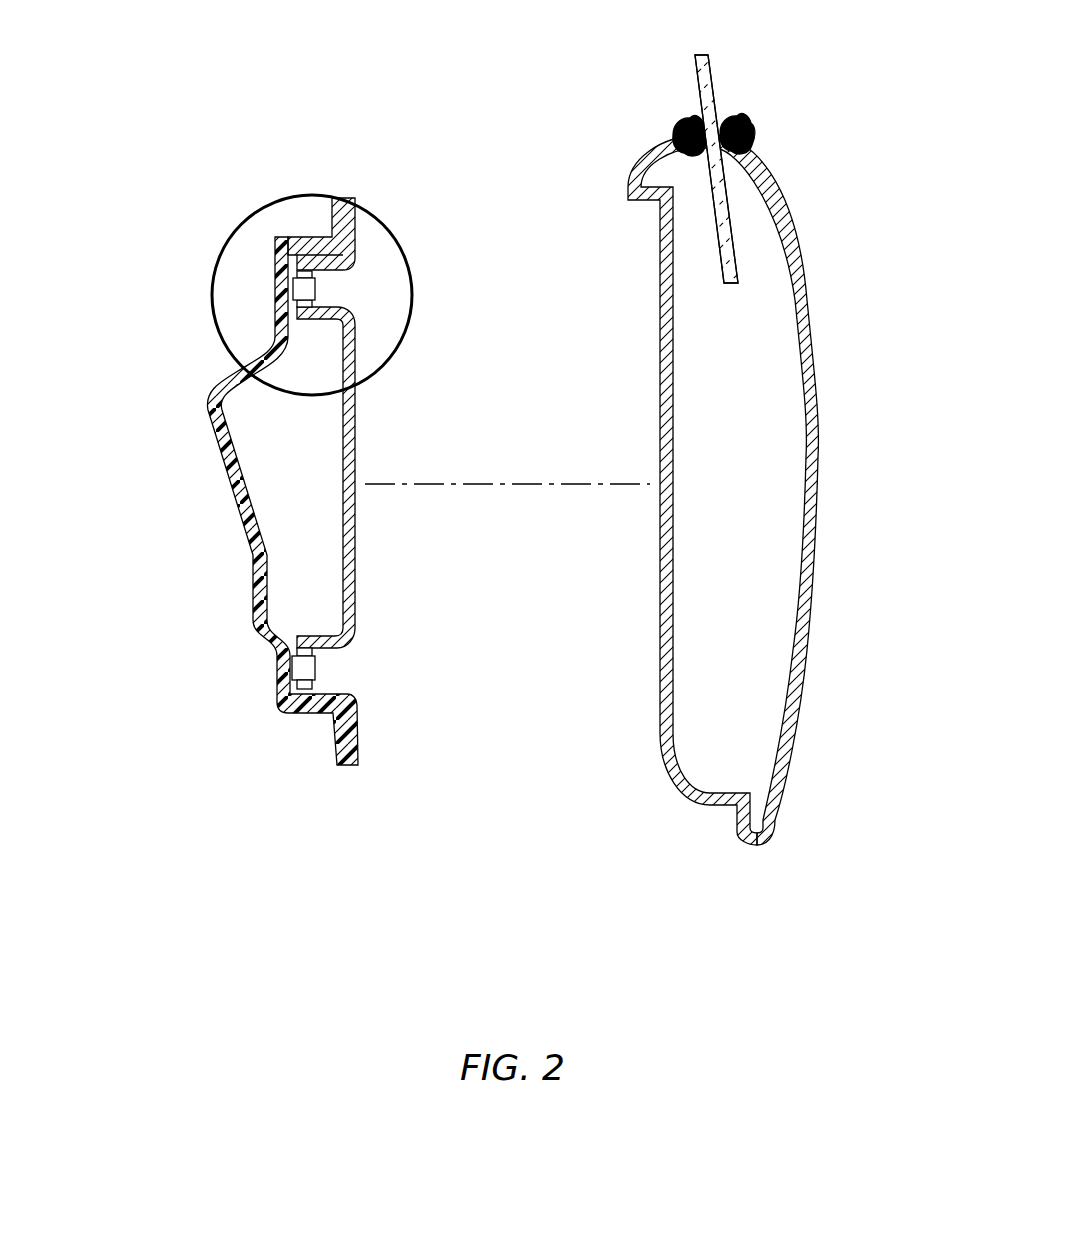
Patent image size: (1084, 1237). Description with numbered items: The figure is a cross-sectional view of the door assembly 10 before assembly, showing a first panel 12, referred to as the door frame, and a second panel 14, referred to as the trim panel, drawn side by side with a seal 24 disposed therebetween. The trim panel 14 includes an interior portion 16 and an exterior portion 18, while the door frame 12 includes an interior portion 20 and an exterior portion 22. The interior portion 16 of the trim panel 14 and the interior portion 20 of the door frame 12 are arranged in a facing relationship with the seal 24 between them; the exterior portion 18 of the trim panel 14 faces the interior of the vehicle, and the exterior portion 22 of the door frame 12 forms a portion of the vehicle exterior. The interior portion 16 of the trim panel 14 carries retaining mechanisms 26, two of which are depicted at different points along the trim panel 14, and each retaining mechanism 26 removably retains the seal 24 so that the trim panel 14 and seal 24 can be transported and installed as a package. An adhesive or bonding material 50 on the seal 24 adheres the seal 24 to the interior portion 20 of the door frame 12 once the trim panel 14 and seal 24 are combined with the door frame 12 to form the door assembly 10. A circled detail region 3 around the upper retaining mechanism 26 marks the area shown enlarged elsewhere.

The door assembly 10 is at (815, 870).
The first panel 12 is at (809, 87).
The second panel 14 is at (172, 210).
The interior portion 16 is at (337, 320).
The exterior portion 18 is at (210, 393).
The interior portion 20 is at (644, 160).
The exterior portion 22 is at (799, 233).
The seal 24 is at (343, 468).
The retaining mechanism 26 is at (300, 232).
The adhesive or bonding material 50 is at (357, 224).
The detail view circle (FIG. 3) 3 is at (212, 288).